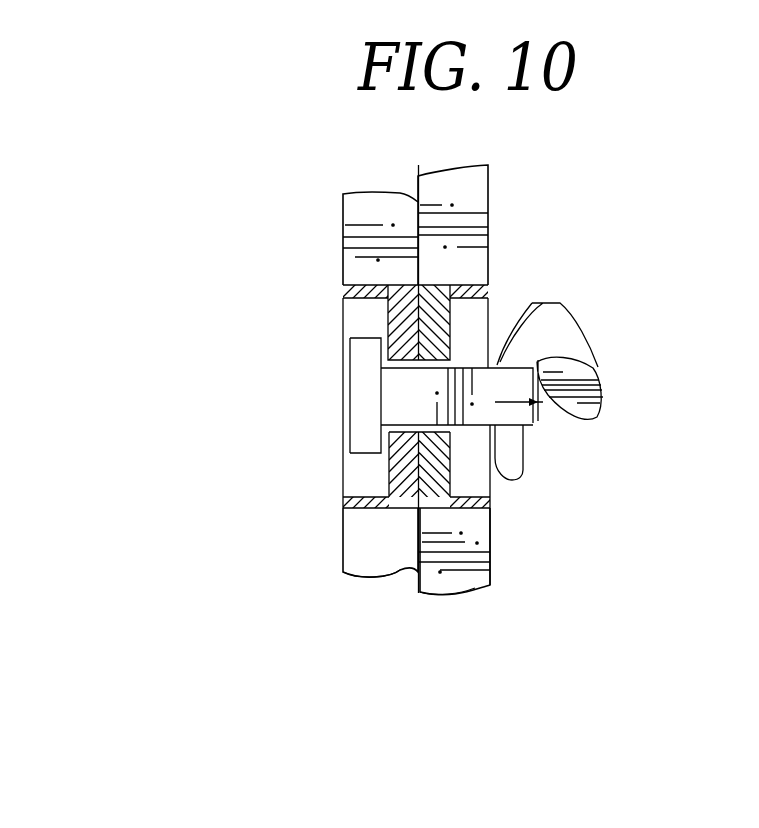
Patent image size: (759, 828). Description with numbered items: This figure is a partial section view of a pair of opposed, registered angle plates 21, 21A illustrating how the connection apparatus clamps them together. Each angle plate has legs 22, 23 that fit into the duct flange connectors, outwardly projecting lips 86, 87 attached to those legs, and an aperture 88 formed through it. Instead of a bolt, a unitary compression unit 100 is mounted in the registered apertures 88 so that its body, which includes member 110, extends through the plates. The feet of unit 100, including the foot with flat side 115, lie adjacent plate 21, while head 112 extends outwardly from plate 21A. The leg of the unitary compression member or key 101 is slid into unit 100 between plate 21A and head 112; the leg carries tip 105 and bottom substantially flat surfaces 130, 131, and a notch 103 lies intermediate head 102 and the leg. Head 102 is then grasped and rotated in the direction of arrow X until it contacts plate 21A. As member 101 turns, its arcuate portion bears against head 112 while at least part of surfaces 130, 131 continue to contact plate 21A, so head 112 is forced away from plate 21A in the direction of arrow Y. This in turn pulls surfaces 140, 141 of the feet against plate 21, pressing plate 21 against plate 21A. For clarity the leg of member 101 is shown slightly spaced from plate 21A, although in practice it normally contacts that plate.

The angle plate 21 is at (402, 586).
The opposing angle plate 21A is at (440, 606).
The leg 22 is at (385, 484).
The leg 23 is at (344, 304).
The lip 86 is at (343, 203).
The lip 87 is at (488, 190).
The aperture 88 is at (410, 512).
The compression unit 100 is at (358, 334).
The compression member 101 is at (569, 296).
The head 102 is at (603, 418).
The notch 103 is at (598, 369).
The tip 105 is at (480, 487).
The member 110 is at (396, 396).
The head 112 is at (530, 423).
The flat side 115 is at (361, 428).
The bottom flat surface 130 is at (532, 303).
The bottom flat surface 131 is at (497, 460).
The foot surface 140 is at (378, 356).
The foot surface 141 is at (362, 446).